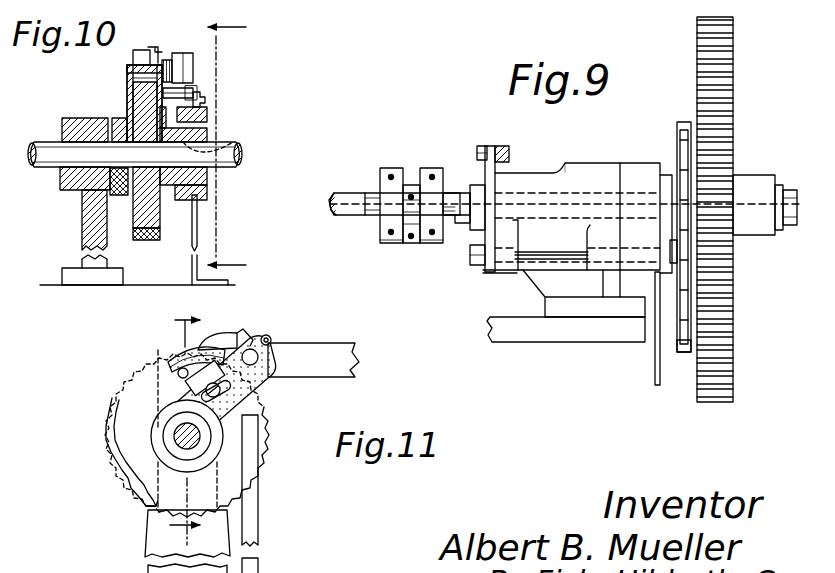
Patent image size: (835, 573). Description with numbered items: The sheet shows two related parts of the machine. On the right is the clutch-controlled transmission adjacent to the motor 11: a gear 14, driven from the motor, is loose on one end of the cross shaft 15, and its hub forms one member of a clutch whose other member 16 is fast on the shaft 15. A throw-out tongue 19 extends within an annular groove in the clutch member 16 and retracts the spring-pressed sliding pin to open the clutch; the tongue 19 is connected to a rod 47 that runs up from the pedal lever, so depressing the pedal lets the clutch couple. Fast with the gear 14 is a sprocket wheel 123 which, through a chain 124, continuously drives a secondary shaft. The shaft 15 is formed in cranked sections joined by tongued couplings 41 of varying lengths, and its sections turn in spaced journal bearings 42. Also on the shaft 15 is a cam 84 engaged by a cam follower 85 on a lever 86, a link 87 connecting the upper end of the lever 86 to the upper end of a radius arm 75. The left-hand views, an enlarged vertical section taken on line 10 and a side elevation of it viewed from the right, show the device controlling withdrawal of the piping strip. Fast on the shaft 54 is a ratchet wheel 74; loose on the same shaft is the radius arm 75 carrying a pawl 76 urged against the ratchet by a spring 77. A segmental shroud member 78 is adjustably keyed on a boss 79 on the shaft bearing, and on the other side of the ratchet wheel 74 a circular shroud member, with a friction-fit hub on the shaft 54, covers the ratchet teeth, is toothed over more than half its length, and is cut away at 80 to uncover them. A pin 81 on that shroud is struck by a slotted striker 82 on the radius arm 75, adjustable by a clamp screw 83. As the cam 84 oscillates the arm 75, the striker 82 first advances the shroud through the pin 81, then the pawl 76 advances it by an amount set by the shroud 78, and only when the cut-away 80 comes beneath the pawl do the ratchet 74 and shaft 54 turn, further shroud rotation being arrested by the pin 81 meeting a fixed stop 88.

In FIG. 10, the shaft 54 is at (46, 145).
In FIG. 11, the shaft 54 is at (178, 433).
In FIG. 10, the ratchet-wheel 74 is at (138, 210).
In FIG. 11, the ratchet-wheel 74 is at (120, 468).
In FIG. 10, the radius arm 75 is at (191, 75).
In FIG. 11, the radius arm 75 is at (262, 380).
In FIG. 10, the pawl 76 is at (142, 50).
In FIG. 11, the pawl 76 is at (214, 336).
In FIG. 10, the spring 77 is at (160, 50).
In FIG. 11, the spring 77 is at (245, 333).
In FIG. 10, the segmental shroud member 78 is at (127, 86).
In FIG. 11, the segmental shroud member 78 is at (176, 352).
In FIG. 10, the boss 79 is at (120, 138).
In FIG. 11, the cut-away 80 is at (140, 497).
In FIG. 10, the pin 81 is at (196, 91).
In FIG. 11, the pin 81 is at (180, 370).
In FIG. 10, the slotted striker 82 is at (206, 104).
In FIG. 11, the slotted striker 82 is at (206, 388).
In FIG. 11, the clamp screw 83 is at (200, 393).
In FIG. 11, the link 87 is at (312, 356).
In FIG. 9, the link 87 is at (502, 146).
In FIG. 10, the fixed stop 88 is at (232, 144).
In FIG. 11, the fixed stop 88 is at (263, 440).
In FIG. 11, the section line 10— 10 is at (183, 425).
In FIG. 10, the electric motor 11 is at (239, 146).
In FIG. 9, the gear 14 is at (722, 58).
In FIG. 9, the cross shaft 15 is at (580, 195).
In FIG. 9, the clutch member 16 is at (630, 170).
In FIG. 9, the tongue 19 is at (662, 250).
In FIG. 9, the tongued couplings 41 is at (340, 195).
In FIG. 9, the journal bearings 42 is at (431, 168).
In FIG. 9, the rod 47 is at (655, 378).
In FIG. 9, the cam 84 is at (488, 180).
In FIG. 9, the cam follower 85 is at (478, 202).
In FIG. 9, the lever 86 is at (492, 192).
In FIG. 9, the sprocket wheel 123 is at (680, 126).
In FIG. 9, the chain 124 is at (684, 356).